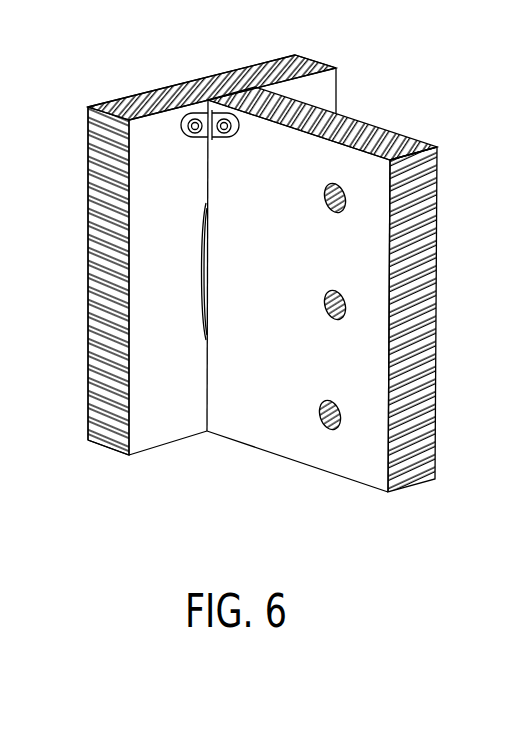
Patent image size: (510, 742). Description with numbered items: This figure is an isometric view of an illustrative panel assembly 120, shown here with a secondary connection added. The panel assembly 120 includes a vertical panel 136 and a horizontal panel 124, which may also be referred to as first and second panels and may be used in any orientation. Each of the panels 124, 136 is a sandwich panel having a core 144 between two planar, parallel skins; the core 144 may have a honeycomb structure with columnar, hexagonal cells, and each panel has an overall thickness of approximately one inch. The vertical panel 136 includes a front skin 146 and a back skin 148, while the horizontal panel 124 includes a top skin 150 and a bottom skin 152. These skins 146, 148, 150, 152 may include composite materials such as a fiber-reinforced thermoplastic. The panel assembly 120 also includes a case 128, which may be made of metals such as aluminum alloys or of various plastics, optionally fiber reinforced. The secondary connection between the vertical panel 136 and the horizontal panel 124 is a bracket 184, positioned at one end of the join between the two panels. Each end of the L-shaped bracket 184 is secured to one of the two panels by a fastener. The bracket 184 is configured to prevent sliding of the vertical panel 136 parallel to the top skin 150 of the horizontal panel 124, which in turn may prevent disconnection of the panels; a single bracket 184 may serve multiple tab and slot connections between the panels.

The panel assembly 120 is at (270, 276).
The horizontal panel 124 is at (348, 312).
The case 128 is at (202, 327).
The vertical panel 136 is at (440, 148).
The core 144 is at (291, 123).
The front skin 146 is at (367, 477).
The back skin 148 is at (433, 457).
The top skin 150 is at (92, 281).
The bottom skin 152 is at (87, 340).
The bracket 184 is at (236, 133).